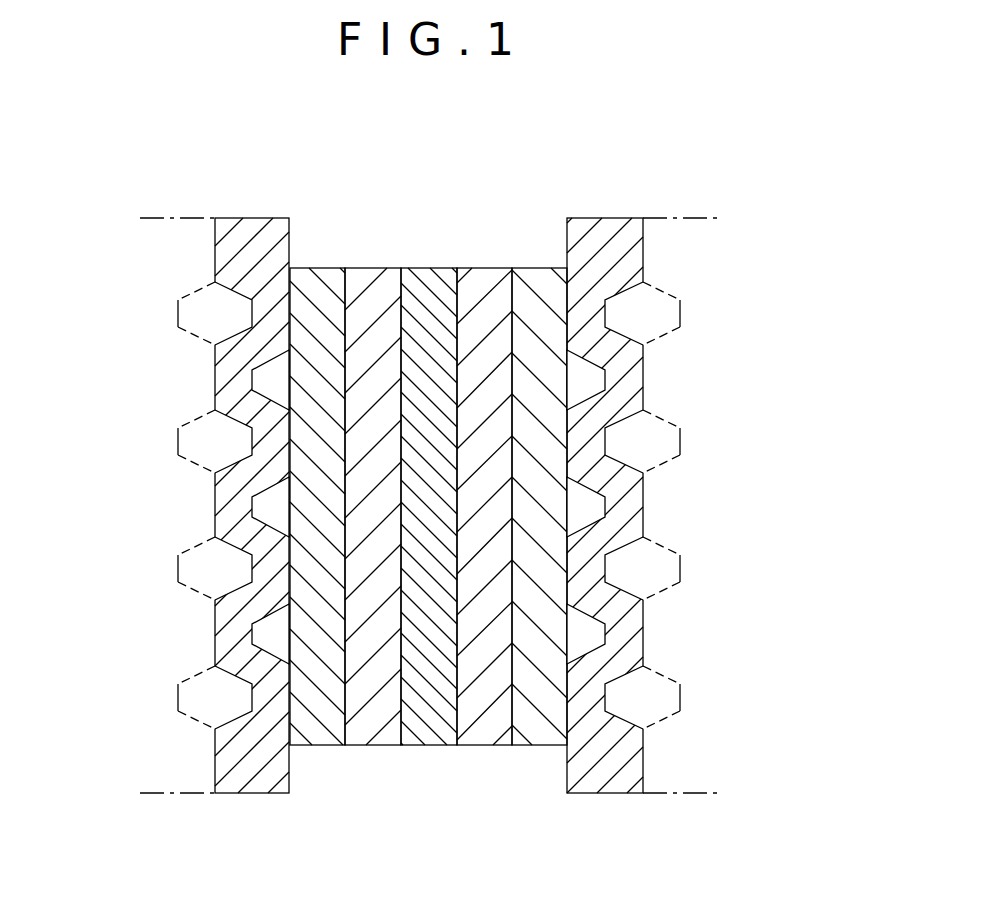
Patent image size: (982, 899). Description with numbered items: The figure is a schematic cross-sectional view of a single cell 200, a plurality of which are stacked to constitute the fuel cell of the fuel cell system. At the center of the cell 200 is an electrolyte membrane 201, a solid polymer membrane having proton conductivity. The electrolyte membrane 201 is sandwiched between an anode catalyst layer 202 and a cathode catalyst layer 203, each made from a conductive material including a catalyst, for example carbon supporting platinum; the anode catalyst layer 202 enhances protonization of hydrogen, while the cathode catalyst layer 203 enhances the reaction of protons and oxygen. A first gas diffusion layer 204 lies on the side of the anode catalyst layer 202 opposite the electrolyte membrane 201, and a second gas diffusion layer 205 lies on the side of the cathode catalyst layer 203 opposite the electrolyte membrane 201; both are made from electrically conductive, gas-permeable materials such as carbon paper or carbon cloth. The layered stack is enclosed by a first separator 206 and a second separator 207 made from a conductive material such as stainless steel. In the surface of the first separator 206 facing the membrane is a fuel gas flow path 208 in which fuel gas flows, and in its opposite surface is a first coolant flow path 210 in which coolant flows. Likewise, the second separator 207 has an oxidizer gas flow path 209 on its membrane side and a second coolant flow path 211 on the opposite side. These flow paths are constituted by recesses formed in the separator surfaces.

The cell 200 is at (648, 178).
The electrolyte membrane 201 is at (429, 745).
The anode catalyst layer 202 is at (484, 745).
The cathode catalyst layer 203 is at (374, 745).
The first gas diffusion layer 204 is at (540, 745).
The second gas diffusion layer 205 is at (320, 745).
The first separator 206 is at (612, 795).
The second separator 207 is at (250, 795).
The fuel gas flow path 208 is at (578, 398).
The oxidizer gas flow path 209 is at (268, 398).
The first coolant flow path 210 is at (617, 316).
The second coolant flow path 211 is at (238, 316).